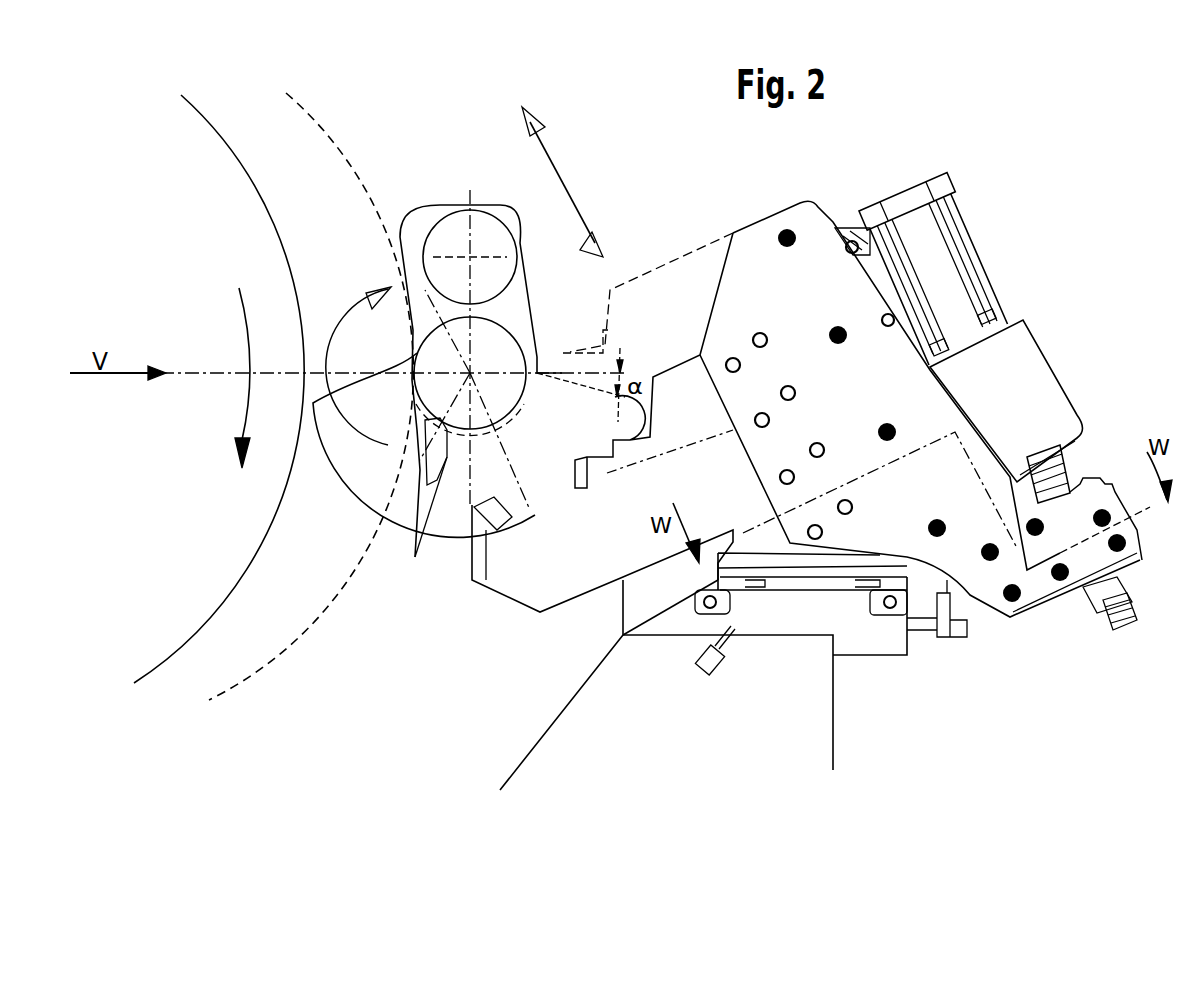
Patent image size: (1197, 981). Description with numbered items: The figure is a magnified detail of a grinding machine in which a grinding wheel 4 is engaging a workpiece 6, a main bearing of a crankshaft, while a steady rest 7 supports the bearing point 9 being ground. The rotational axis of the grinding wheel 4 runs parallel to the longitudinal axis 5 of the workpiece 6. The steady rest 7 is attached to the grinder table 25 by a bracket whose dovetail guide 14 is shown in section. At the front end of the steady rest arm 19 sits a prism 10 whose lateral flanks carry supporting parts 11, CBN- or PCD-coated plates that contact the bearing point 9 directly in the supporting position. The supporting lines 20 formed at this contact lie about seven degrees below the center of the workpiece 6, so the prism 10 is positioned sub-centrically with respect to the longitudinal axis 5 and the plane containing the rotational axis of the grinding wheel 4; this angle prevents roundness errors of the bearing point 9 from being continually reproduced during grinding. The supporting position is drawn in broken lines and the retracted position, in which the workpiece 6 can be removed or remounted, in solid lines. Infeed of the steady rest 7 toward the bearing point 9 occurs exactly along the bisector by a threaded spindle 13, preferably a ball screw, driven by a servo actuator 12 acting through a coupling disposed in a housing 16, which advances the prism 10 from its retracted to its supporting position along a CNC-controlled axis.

The grinding wheel 4 is at (273, 217).
The longitudinal axis of the workpiece 5 is at (537, 343).
The workpiece 6 is at (433, 358).
The steady rest 7 is at (727, 227).
The bearing point 9 is at (507, 320).
The prism 10 is at (545, 508).
The supporting parts 11 is at (607, 475).
The servo actuator 12 is at (952, 265).
The threaded spindle 13 is at (1098, 452).
The dovetail guide 14 is at (847, 598).
The housing 16 is at (1033, 390).
The steady rest arm 19 is at (567, 582).
The supporting lines 20 is at (415, 550).
The grinder table 25 is at (778, 653).